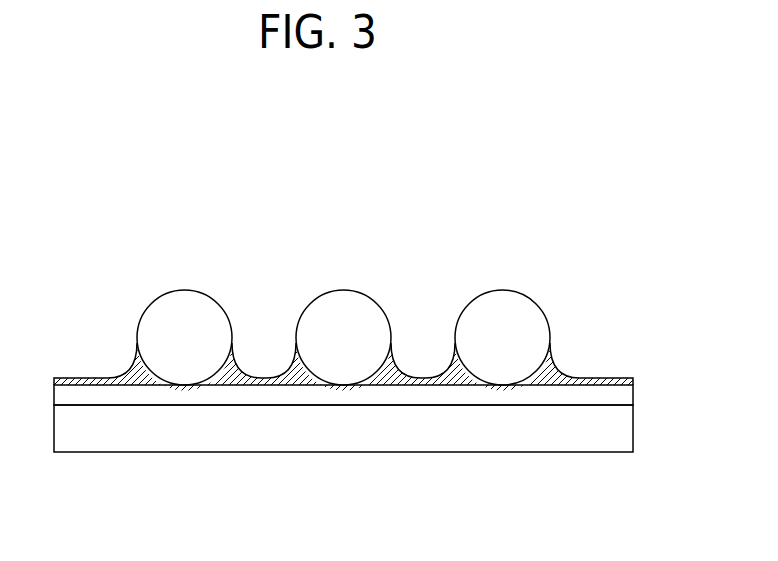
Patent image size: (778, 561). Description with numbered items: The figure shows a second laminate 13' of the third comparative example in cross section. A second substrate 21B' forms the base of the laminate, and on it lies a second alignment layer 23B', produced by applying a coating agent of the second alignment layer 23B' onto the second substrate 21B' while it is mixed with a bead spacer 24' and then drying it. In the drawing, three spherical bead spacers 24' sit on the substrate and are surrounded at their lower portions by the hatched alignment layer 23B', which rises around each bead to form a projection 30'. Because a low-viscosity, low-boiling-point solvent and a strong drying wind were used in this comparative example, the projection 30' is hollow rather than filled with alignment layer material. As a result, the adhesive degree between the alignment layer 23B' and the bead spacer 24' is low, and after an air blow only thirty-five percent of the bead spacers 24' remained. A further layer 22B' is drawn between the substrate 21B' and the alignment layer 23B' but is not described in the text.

The second laminate 13' is at (383, 308).
The second substrate 21B' is at (390, 434).
The intermediate layer 22B' is at (390, 406).
The second alignment layer 23B' is at (383, 425).
The bead spacer 24' is at (423, 394).
The hollow projection 30' is at (364, 425).